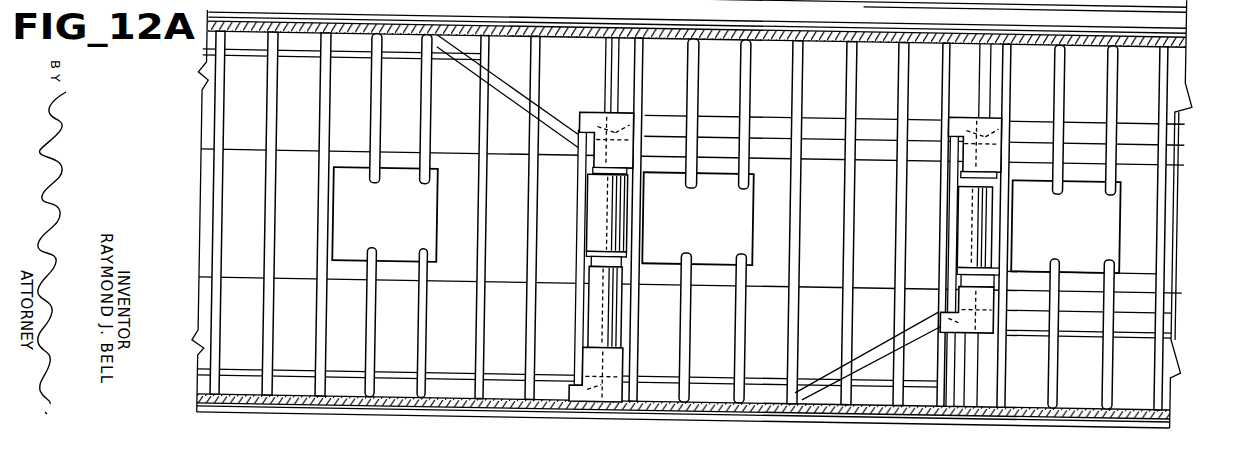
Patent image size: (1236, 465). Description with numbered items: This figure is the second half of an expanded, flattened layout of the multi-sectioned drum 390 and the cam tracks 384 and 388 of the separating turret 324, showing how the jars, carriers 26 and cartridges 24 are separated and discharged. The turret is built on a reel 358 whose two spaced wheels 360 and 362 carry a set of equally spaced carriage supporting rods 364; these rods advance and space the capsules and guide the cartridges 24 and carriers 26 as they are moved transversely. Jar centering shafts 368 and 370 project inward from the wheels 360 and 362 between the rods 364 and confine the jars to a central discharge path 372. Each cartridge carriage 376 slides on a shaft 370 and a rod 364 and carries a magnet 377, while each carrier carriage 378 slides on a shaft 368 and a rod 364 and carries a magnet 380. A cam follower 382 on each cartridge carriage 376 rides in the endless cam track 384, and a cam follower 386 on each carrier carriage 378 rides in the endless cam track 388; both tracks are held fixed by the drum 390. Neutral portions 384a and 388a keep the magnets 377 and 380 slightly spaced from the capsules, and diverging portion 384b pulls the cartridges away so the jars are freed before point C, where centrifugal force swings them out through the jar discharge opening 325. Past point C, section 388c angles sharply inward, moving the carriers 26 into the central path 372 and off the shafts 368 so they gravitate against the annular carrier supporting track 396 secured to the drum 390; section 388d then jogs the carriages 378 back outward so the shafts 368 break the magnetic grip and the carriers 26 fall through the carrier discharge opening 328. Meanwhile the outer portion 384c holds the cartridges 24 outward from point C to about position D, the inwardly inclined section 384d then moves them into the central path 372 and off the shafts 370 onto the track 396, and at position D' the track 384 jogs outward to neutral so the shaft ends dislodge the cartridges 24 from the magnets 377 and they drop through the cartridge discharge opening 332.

The cartridge 24 is at (596, 292).
The carrier 26 is at (592, 202).
The separating turret 324 is at (633, 26).
The jar discharge opening 325 is at (403, 173).
The carrier discharge opening 328 is at (712, 171).
The cartridge discharge opening 332 is at (1086, 171).
The reel 358 is at (200, 397).
The wheel 360 is at (567, 27).
The wheel 362 is at (546, 394).
The carriage supporting rod 364 is at (215, 186).
The jar centering shaft 368 is at (613, 88).
The jar centering shaft 370 is at (590, 247).
The central discharge path 372 is at (320, 258).
The cartridge carriage 376 is at (618, 355).
The magnet 377 is at (997, 270).
The carrier carriage 378 is at (625, 138).
The magnet 380 is at (592, 166).
The cam follower 382 is at (625, 384).
The cam track 384 is at (292, 380).
The neutral portion 384a is at (1150, 311).
The diverging track portion 384b is at (734, 0).
The outer portion 384c is at (226, 382).
The inwardly inclined section 384d is at (812, 358).
The cam follower 386 is at (622, 116).
The cam track 388 is at (243, 57).
The neutral portion 388a is at (818, 107).
The track section 388c is at (497, 70).
The track section 388d is at (546, 131).
The multi-sectioned drum 390 is at (230, 299).
The annular carrier supporting track 396 is at (523, 216).
The point C is at (347, 50).
The position D is at (851, 205).
The position D' is at (869, 317).